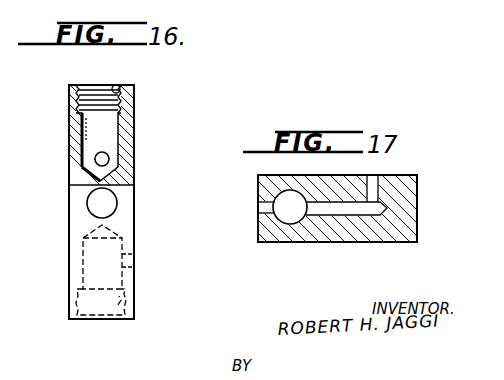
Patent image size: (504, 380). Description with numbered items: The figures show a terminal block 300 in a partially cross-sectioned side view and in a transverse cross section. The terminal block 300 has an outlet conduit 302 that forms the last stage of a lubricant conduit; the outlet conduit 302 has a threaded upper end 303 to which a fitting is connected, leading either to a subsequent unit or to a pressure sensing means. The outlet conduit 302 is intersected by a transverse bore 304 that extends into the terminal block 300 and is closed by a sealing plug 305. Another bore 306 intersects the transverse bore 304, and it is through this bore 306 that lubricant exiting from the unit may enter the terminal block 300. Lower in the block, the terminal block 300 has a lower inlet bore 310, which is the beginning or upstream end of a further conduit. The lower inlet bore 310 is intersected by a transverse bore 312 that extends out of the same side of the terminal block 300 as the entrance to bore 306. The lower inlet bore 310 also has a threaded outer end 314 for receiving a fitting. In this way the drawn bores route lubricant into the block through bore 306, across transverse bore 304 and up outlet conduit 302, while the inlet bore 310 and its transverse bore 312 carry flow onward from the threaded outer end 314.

In FIG. 16, the terminal block 300 is at (70, 219).
In FIG. 16, the outlet conduit 302 is at (107, 133).
In FIG. 16, the threaded upper end 303 is at (117, 86).
In FIG. 17, the threaded upper end 303 is at (289, 223).
In FIG. 16, the transverse bore 304 is at (110, 157).
In FIG. 17, the transverse bore 304 is at (340, 213).
In FIG. 17, the sealing plug 305 is at (258, 205).
In FIG. 17, the bore 306 is at (375, 176).
In FIG. 16, the lower inlet bore 310 is at (83, 259).
In FIG. 16, the transverse bore 312 is at (137, 251).
In FIG. 16, the threaded outer end 314 is at (107, 329).